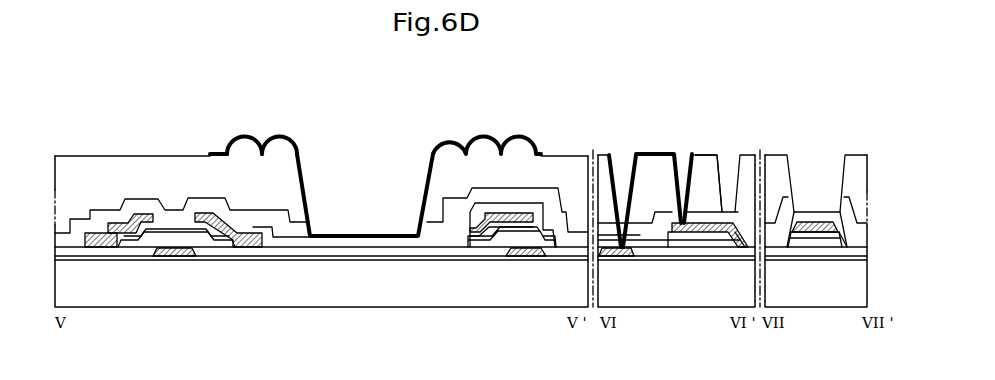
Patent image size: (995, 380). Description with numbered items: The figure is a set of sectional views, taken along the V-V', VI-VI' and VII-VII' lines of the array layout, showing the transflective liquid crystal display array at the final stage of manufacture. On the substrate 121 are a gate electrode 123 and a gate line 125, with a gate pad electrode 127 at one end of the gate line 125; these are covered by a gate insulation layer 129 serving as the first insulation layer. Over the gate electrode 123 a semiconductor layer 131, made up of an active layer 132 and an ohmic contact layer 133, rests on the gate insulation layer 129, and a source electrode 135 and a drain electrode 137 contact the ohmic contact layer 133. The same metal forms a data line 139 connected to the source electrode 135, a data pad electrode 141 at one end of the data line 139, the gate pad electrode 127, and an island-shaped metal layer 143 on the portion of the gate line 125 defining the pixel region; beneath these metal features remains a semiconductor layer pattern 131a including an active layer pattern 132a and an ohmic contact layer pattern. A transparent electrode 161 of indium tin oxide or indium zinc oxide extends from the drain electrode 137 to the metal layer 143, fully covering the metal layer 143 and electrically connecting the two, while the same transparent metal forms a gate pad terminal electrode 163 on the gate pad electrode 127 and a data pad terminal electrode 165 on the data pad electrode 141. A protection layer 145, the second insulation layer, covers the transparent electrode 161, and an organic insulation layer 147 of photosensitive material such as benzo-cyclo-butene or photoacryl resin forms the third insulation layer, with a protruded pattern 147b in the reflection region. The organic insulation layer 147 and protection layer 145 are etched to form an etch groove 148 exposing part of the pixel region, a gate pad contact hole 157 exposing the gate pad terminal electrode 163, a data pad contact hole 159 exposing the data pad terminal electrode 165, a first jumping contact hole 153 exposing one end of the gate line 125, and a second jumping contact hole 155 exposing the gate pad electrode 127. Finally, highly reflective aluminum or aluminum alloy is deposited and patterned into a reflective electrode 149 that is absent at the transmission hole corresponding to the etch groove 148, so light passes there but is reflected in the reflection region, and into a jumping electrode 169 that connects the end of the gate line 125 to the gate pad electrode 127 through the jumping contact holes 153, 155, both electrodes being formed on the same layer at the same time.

The substrate 121 is at (432, 294).
The gate electrode 123 is at (173, 252).
The gate line 125 is at (530, 258).
The gate pad electrode 127 is at (705, 247).
The gate insulation layer 129 is at (323, 258).
The semiconductor layer 131 is at (176, 303).
The active layer 132 is at (133, 248).
The ohmic contact layer 133 is at (210, 234).
The semiconductor pattern 131a is at (485, 242).
The active layer pattern 132a is at (680, 248).
The source electrode 135 is at (148, 215).
The drain electrode 137 is at (250, 233).
The data line 139 is at (90, 229).
The data pad electrode 141 is at (813, 222).
The island-shaped metal layer 143 is at (517, 214).
The protection layer 145 is at (80, 222).
The organic insulation layer 147 is at (105, 158).
The protruded pattern 147b is at (280, 136).
The etch groove 148 is at (352, 178).
The reflective electrode 149 is at (240, 136).
The first jumping contact hole 153 is at (621, 146).
The second jumping contact hole 155 is at (681, 145).
The gate pad contact hole 157 is at (727, 150).
The data pad contact hole 159 is at (815, 150).
The transparent electrode 161 is at (358, 247).
The gate pad terminal electrode 163 is at (742, 212).
The data pad terminal electrode 165 is at (847, 240).
The jumping electrode 169 is at (647, 150).